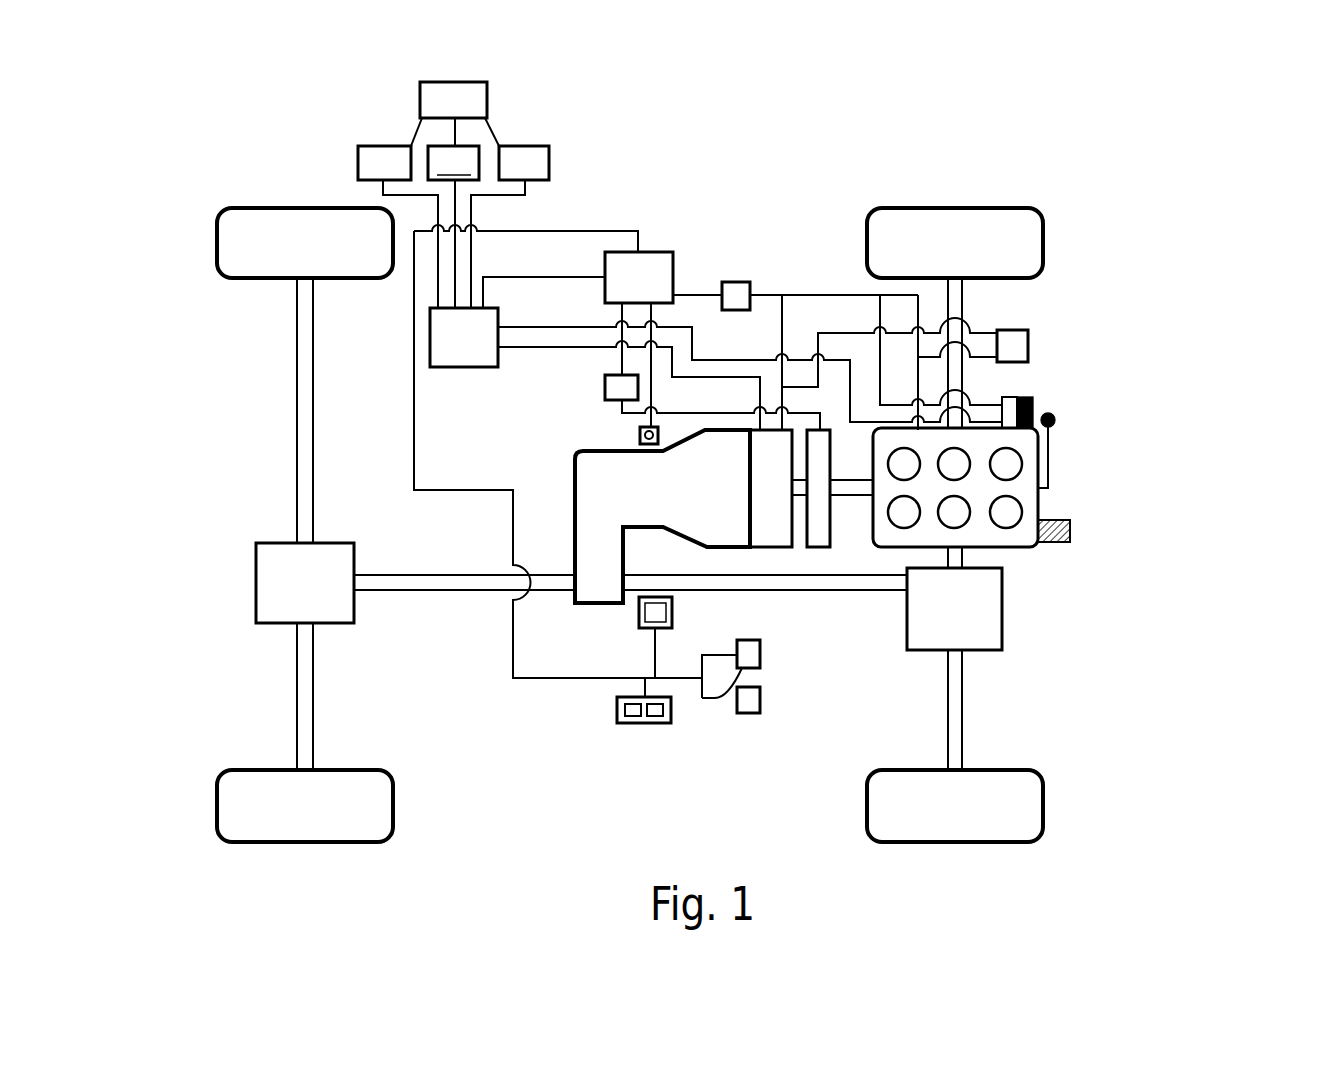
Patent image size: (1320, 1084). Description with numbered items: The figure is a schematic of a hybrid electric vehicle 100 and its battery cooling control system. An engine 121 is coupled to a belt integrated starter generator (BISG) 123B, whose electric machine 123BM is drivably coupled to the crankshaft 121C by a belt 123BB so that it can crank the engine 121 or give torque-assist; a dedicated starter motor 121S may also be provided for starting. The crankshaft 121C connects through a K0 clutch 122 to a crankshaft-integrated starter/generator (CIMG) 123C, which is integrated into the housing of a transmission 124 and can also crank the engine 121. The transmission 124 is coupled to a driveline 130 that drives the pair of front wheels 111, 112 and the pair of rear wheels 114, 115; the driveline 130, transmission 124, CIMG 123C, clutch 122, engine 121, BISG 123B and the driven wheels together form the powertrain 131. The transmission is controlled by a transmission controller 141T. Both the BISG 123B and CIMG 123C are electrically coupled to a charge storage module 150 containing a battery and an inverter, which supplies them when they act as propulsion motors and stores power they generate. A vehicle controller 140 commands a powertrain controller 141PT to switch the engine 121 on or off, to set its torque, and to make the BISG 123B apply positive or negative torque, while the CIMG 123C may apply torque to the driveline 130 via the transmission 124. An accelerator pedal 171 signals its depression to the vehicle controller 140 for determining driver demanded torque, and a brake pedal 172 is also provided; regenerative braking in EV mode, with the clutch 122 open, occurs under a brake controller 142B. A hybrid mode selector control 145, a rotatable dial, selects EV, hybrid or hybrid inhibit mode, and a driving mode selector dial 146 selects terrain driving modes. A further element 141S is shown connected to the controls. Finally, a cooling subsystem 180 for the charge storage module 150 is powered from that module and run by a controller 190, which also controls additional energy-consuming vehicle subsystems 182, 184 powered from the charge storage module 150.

The hybrid electric vehicle 100 is at (1112, 165).
The front wheel 111 is at (1027, 243).
The front wheel 112 is at (1030, 817).
The rear wheel 114 is at (240, 215).
The rear wheel 115 is at (235, 817).
The engine 121 is at (1028, 448).
The crankshaft 121C is at (868, 486).
The starter motor 121S is at (1068, 532).
The clutch 122 is at (815, 540).
The belt integrated starter generator 123B is at (1036, 402).
The belt 123BB is at (1050, 470).
The electric machine 123BM is at (1075, 389).
The crankshaft-integrated starter/generator 123C is at (770, 540).
The transmission 124 is at (600, 598).
The driveline 130 is at (455, 622).
The powertrain 131 is at (1040, 568).
The vehicle controller 140 is at (650, 250).
The powertrain controller 141PT is at (737, 280).
The switch 141S is at (633, 723).
The transmission controller 141T is at (605, 388).
The brake controller 142B is at (1030, 335).
The hybrid mode selector control 145 is at (648, 628).
The driving mode selector dial 146 is at (640, 434).
The charge storage module 150 is at (462, 355).
The accelerator pedal 171 is at (745, 713).
The brake pedal 172 is at (715, 698).
The cooling subsystem 180 is at (453, 163).
The vehicle subsystem 182 is at (547, 160).
The vehicle subsystem 184 is at (360, 160).
The controller 190 is at (477, 97).